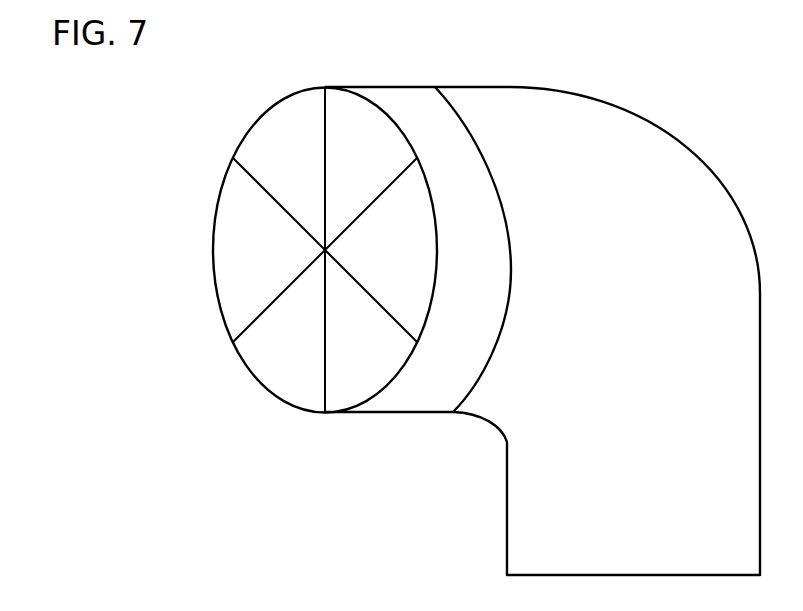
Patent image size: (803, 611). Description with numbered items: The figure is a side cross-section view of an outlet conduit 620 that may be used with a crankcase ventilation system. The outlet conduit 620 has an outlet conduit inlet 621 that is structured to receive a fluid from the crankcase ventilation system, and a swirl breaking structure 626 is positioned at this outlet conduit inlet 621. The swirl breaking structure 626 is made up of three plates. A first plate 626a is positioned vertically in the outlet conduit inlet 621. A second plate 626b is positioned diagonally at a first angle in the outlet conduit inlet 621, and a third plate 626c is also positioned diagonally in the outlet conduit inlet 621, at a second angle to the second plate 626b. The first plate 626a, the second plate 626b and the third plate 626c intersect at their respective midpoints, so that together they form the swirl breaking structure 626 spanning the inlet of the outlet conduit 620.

The outlet conduit 620 is at (615, 85).
The outlet conduit inlet 621 is at (360, 86).
The swirl breaking structure 626 is at (273, 250).
The first plate 626a is at (325, 130).
The second plate 626b is at (263, 190).
The third plate 626c is at (318, 249).